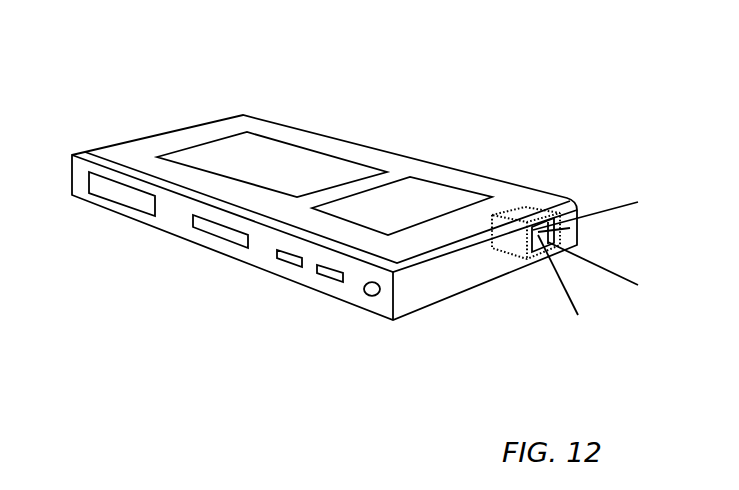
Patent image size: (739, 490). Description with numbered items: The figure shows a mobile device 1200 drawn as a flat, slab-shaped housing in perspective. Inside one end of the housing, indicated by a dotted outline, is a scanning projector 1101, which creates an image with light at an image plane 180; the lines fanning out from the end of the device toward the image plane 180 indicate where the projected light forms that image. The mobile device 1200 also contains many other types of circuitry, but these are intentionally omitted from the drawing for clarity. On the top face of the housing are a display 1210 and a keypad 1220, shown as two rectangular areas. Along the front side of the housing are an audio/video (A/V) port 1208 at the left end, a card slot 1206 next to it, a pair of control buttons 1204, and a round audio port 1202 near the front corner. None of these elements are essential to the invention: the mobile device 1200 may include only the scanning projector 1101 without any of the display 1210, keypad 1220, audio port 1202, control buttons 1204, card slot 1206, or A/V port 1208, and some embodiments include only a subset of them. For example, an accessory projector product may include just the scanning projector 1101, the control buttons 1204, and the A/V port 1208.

The mobile device 1200 is at (598, 72).
The keypad 1220 is at (278, 153).
The display 1210 is at (410, 190).
The audio/video (A/V) port 1208 is at (107, 189).
The card slot 1206 is at (213, 230).
The control buttons 1204 is at (322, 275).
The audio port 1202 is at (368, 296).
The scanning projector 1101 is at (525, 208).
The image plane 180 is at (593, 258).